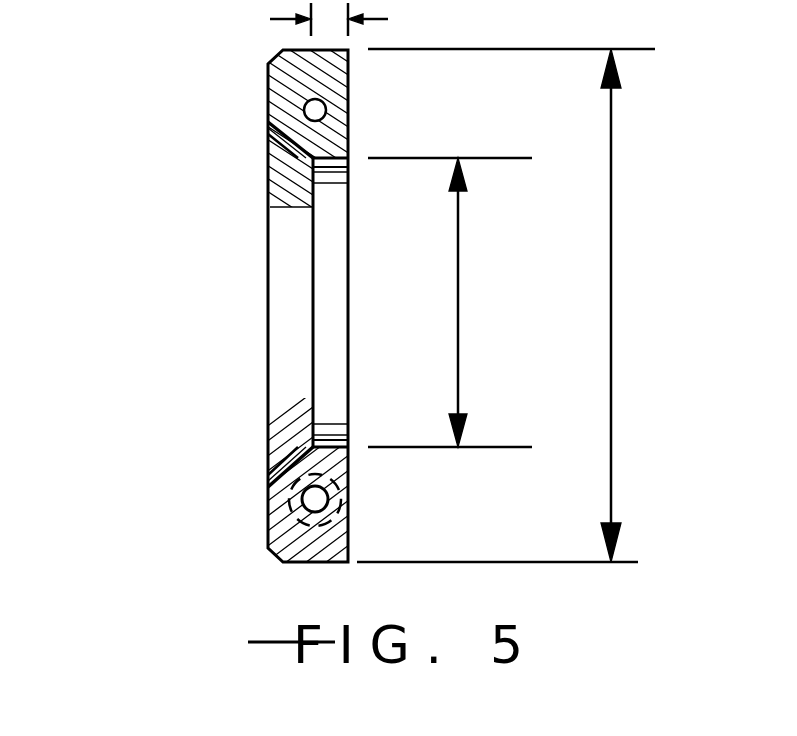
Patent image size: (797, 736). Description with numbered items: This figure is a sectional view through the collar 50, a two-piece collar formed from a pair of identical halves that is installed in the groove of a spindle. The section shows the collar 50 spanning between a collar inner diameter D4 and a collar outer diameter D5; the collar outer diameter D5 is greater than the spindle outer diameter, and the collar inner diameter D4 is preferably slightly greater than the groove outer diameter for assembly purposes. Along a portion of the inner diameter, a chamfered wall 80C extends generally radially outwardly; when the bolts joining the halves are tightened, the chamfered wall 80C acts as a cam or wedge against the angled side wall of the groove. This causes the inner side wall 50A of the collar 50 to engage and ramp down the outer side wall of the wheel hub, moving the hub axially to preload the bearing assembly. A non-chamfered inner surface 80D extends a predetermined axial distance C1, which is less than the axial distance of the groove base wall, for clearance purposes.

The collar 50 is at (367, 298).
The inner side wall 50A is at (349, 473).
The chamfered wall 80C is at (286, 140).
The non-chamfered inner surface 80D is at (330, 163).
The axial distance C1 is at (330, 18).
The collar inner diameter D4 is at (459, 303).
The collar outer diameter D5 is at (612, 317).